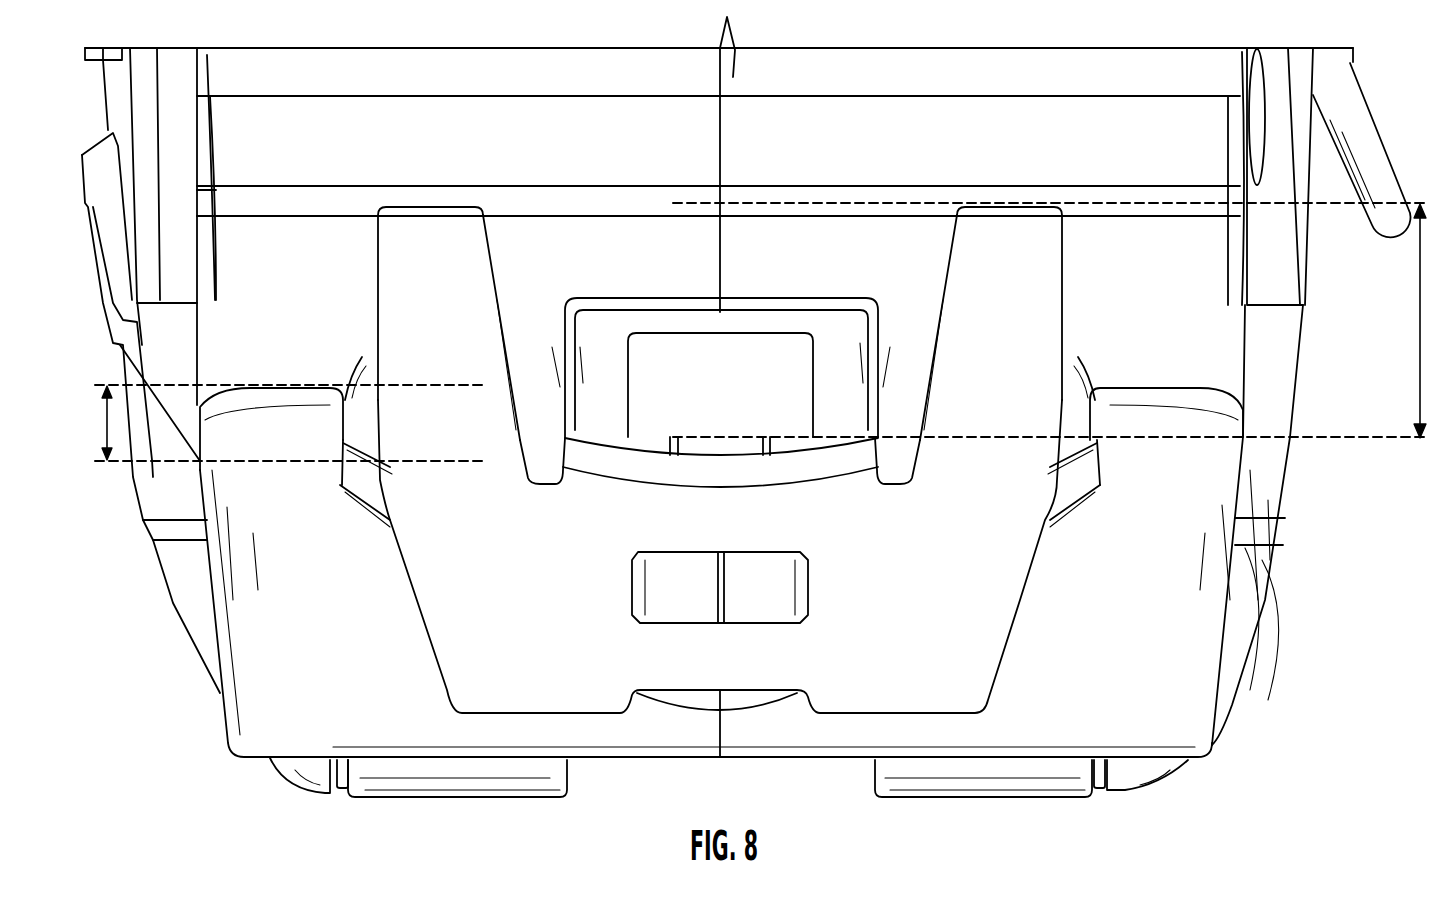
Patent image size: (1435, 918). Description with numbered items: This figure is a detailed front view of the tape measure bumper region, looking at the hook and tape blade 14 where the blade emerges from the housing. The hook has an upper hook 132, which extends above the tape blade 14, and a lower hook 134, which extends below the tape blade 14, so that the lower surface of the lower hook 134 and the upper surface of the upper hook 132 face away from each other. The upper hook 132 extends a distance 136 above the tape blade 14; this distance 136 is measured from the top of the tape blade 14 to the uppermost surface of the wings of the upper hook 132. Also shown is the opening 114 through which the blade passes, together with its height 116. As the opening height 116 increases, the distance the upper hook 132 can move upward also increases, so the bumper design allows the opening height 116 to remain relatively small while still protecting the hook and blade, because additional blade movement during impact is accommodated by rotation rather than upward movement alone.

The tape blade 14 is at (903, 473).
The opening 114 is at (368, 430).
The height 116 is at (96, 433).
The upper hook 132 is at (408, 290).
The lower hook 134 is at (495, 670).
The distance 136 is at (1412, 323).